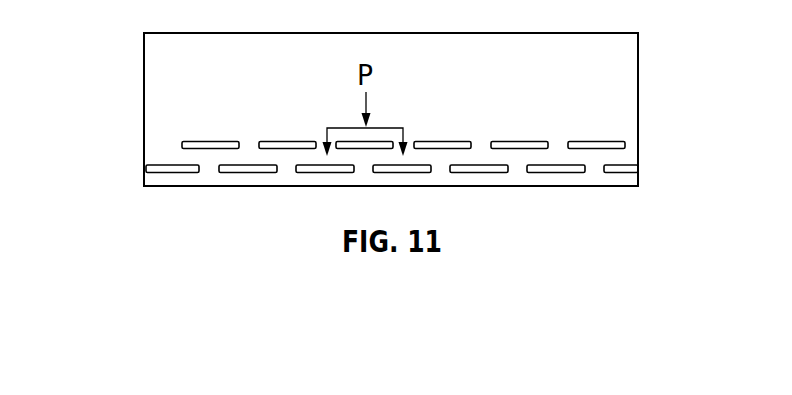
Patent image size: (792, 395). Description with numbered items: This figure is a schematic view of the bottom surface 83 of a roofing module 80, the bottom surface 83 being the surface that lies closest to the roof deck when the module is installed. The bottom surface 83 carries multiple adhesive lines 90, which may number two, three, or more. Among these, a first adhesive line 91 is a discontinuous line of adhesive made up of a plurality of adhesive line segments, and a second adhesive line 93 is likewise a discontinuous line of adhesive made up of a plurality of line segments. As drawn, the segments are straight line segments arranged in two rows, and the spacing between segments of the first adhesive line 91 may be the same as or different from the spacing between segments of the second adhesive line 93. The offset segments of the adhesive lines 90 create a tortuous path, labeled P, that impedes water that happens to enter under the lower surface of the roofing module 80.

The roofing module 80 is at (658, 65).
The bottom surface 83 is at (286, 95).
The second adhesive line 93 is at (199, 128).
The first adhesive line 91 is at (175, 189).
The adhesive lines 90 is at (627, 166).